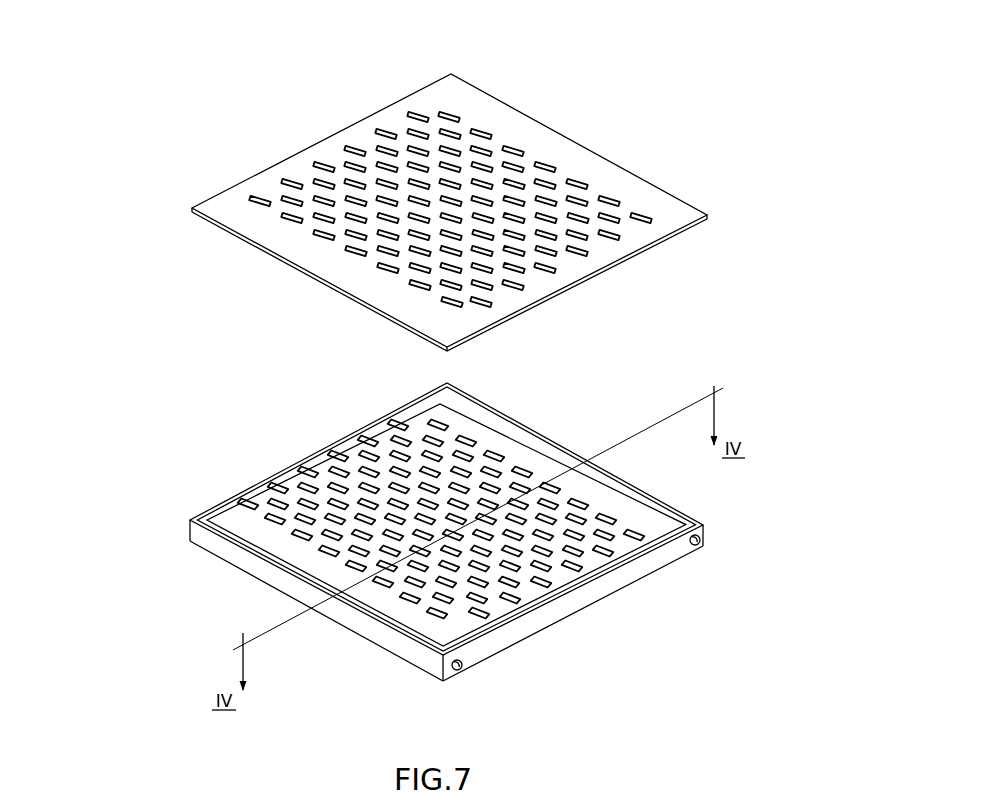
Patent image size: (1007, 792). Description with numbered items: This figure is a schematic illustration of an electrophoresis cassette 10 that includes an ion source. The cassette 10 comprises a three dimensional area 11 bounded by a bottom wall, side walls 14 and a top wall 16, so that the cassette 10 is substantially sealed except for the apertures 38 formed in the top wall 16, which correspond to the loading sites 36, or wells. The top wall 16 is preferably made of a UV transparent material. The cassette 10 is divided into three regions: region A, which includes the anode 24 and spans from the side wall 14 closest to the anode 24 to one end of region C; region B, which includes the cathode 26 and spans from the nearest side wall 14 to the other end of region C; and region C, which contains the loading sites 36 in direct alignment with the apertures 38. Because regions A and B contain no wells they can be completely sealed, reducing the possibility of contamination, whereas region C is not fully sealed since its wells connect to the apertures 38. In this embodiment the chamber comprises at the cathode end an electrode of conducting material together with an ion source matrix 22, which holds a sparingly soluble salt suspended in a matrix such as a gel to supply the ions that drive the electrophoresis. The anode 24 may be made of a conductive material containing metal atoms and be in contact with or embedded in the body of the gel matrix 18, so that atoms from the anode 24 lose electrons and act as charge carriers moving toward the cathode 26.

The cassette 10 is at (705, 56).
The three dimensional area 11 is at (120, 513).
The side walls 14 is at (243, 557).
The top wall 16 is at (313, 183).
The gel matrix 18 is at (362, 455).
The ion source matrix 22 is at (483, 432).
The anode 24 is at (387, 628).
The cathode 26 is at (533, 438).
The loading sites 36 is at (577, 532).
The apertures 38 is at (565, 175).
The region A is at (452, 634).
The region B is at (691, 516).
The region C is at (562, 578).